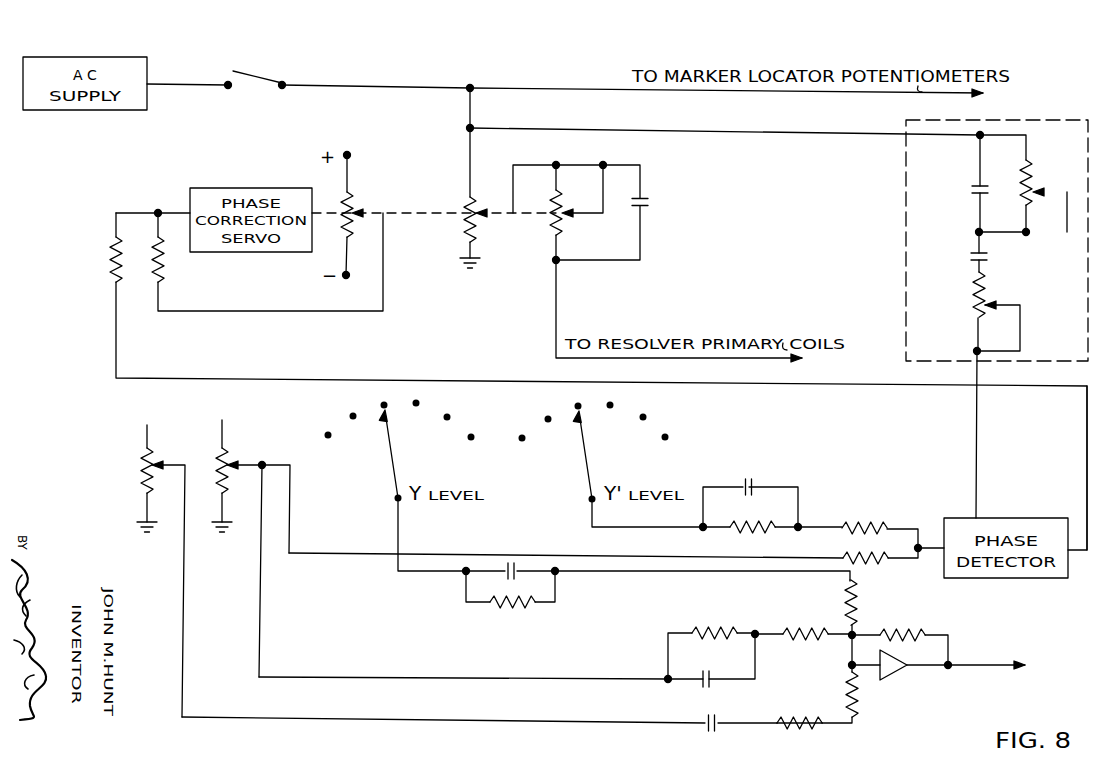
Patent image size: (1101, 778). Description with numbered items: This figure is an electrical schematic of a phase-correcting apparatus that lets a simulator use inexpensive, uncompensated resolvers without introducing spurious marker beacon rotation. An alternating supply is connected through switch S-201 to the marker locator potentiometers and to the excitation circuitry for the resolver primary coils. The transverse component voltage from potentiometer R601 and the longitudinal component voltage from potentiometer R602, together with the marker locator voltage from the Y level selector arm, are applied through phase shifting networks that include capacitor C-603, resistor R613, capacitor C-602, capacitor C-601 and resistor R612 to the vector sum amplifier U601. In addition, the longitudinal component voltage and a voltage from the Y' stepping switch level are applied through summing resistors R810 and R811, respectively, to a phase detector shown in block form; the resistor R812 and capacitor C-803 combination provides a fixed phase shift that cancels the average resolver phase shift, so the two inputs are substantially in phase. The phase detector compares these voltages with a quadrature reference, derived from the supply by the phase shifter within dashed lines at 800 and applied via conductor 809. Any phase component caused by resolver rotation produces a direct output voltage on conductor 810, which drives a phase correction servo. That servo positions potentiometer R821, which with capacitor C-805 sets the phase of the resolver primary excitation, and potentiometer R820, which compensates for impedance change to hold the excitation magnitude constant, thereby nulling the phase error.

The switch S-201 is at (280, 78).
The potentiometer R820 is at (480, 220).
The potentiometer R821 is at (567, 220).
The capacitor C-805 is at (646, 215).
The phase shifter 800 is at (906, 310).
The conductor 809 is at (975, 433).
The conductor 810 is at (1088, 433).
The potentiometer R601 is at (155, 464).
The potentiometer R602 is at (230, 464).
The capacitor C-603 is at (533, 557).
The capacitor C-803 is at (765, 478).
The resistor R812 is at (773, 511).
The summing resistor R811 is at (883, 511).
The summing resistor R810 is at (862, 568).
The resistor R613 is at (738, 614).
The capacitor C-602 is at (722, 666).
The capacitor C-601 is at (733, 706).
The resistor R612 is at (818, 708).
The vector sum amplifier U601 is at (886, 685).